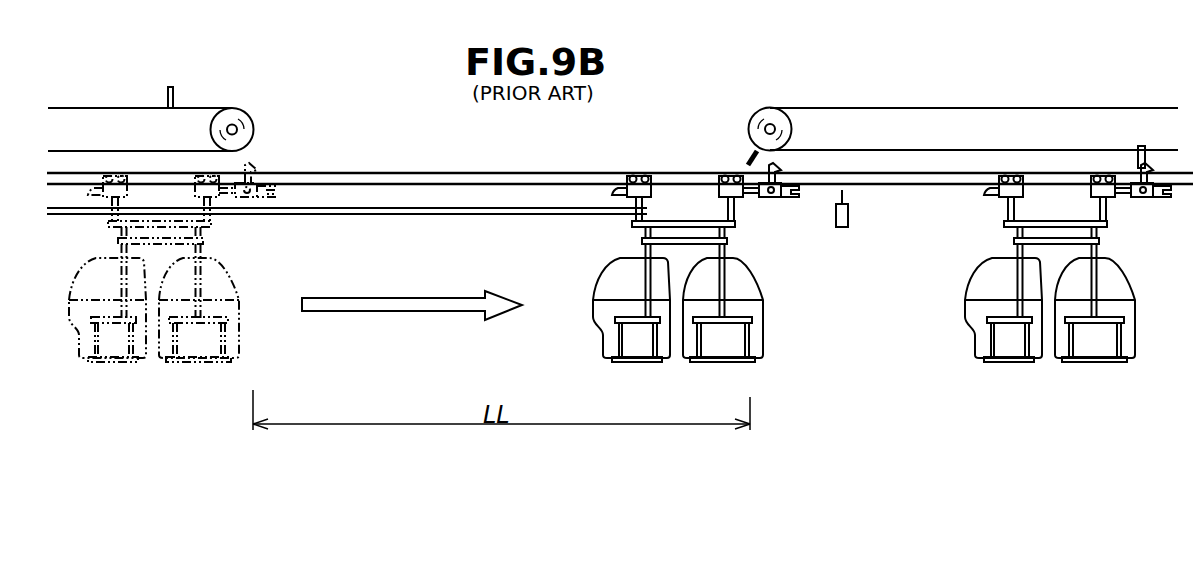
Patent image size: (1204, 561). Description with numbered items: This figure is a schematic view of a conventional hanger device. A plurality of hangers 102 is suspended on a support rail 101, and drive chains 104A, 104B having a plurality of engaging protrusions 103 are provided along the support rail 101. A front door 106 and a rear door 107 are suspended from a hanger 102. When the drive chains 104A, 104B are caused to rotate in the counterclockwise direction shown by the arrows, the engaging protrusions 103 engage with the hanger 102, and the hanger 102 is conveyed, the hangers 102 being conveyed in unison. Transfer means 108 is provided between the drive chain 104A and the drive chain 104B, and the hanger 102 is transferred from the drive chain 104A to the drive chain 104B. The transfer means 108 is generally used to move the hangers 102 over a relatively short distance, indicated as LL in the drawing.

The support rail 101 is at (352, 179).
The hanger 102 is at (819, 290).
The engaging protrusion 103 is at (173, 89).
The drive chain 104A is at (118, 108).
The drive chain 104B is at (1042, 108).
The front door 106 is at (765, 310).
The rear door 107 is at (606, 305).
The transfer means 108 is at (368, 215).